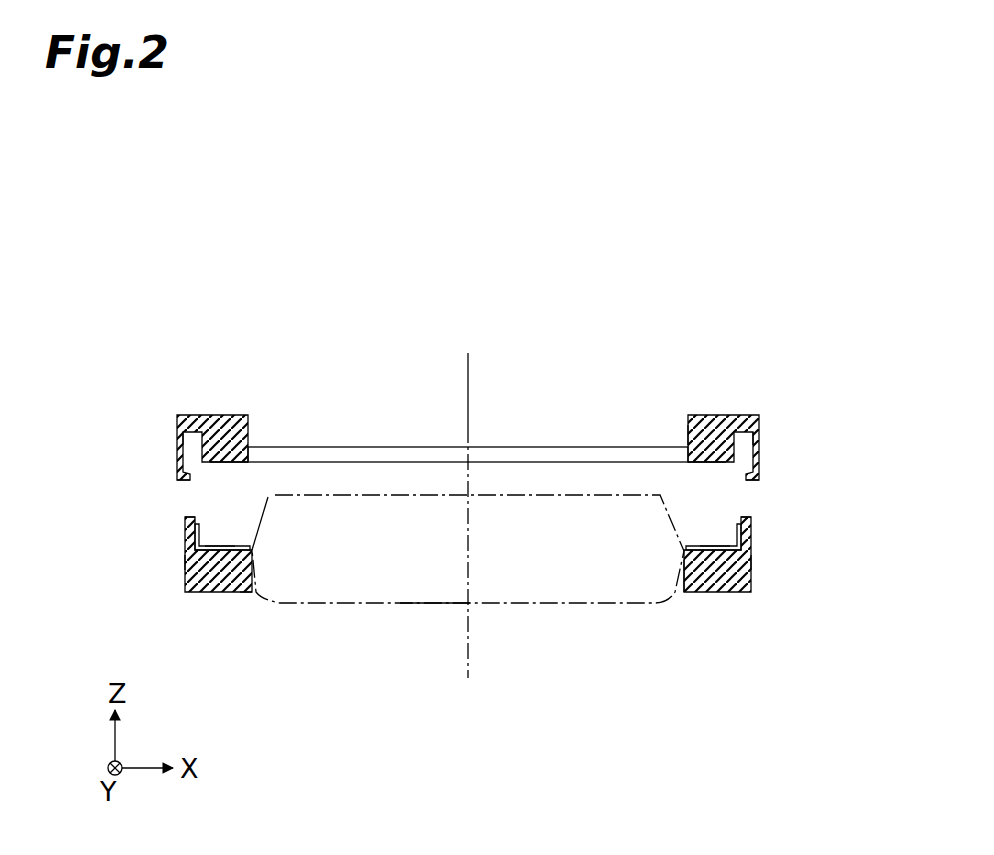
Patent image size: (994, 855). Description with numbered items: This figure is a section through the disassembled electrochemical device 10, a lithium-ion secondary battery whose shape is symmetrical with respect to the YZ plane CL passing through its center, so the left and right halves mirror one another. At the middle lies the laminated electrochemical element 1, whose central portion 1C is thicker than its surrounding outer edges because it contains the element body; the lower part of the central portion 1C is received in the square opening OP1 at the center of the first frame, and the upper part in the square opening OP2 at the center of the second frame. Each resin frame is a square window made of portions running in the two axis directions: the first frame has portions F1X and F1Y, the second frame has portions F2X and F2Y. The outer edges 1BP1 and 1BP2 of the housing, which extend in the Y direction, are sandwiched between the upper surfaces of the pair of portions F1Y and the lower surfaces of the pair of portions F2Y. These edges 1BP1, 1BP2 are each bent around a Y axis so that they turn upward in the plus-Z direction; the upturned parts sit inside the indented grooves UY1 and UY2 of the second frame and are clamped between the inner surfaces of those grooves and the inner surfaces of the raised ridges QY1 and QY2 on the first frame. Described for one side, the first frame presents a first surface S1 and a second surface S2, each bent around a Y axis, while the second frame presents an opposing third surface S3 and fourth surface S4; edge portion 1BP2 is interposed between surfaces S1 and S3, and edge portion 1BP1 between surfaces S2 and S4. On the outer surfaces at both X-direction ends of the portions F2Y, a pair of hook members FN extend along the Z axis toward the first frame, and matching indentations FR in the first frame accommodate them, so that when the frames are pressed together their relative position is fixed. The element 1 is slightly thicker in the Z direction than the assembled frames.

The electrochemical device 10 is at (697, 300).
The electrochemical element 1 is at (573, 606).
The central portion 1C is at (432, 606).
The YZ plane CL is at (467, 500).
The portion extending in the Y-axis direction of the second frame F2Y is at (212, 430).
The portion extending in the X-axis direction of the second frame F2X is at (326, 455).
The portion extending in the Y-axis direction of the first frame F1Y is at (215, 592).
The portion extending in the X-axis direction of the first frame F1X is at (258, 592).
The indented groove UY2 is at (183, 440).
The indented groove UY1 is at (753, 440).
The hook member FN is at (178, 478).
The indentation FR is at (184, 561).
The raised ridge QY2 is at (190, 517).
The raised ridge QY1 is at (746, 517).
The outer edge of the housing 1BP2 is at (200, 538).
The outer edge of the housing 1BP1 is at (738, 538).
The first surface S1 is at (220, 548).
The second surface S2 is at (716, 548).
The third surface S3 is at (228, 463).
The fourth surface S4 is at (698, 463).
The opening OP1 is at (674, 592).
The opening OP2 is at (686, 430).